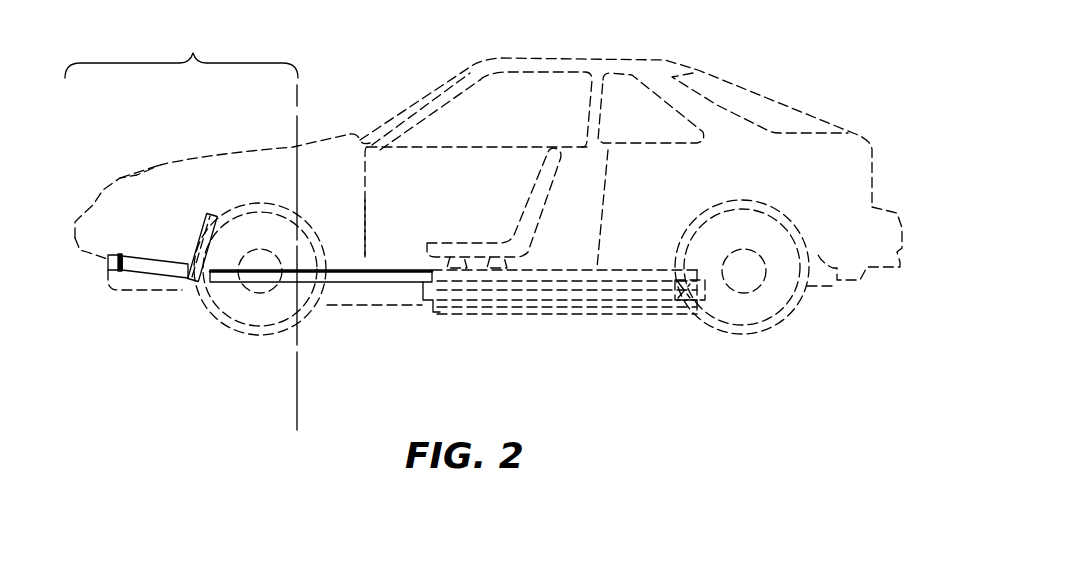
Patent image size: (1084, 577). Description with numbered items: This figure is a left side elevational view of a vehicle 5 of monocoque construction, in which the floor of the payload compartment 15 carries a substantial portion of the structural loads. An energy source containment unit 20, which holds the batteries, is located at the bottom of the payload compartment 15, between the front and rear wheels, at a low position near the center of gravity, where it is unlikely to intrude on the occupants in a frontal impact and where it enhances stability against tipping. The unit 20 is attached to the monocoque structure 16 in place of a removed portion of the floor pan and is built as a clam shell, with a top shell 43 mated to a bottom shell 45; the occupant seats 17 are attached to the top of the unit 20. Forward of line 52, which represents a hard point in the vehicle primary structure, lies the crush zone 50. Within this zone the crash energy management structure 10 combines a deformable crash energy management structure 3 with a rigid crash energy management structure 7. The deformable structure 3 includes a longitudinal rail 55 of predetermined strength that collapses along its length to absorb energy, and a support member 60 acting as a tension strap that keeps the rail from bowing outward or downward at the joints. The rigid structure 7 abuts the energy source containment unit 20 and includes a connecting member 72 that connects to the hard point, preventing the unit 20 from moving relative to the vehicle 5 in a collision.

The vehicle 5 is at (685, 38).
The payload compartment 15 is at (478, 103).
The crash energy management structure 10 is at (165, 185).
The crush zone 50 is at (181, 51).
The line 52 is at (300, 112).
The support member 60 is at (212, 205).
The longitudinal rail 55 is at (152, 257).
The deformable crash energy management structure 3 is at (144, 295).
The rigid crash energy management structure 7 is at (358, 295).
The connecting member 72 is at (357, 268).
The monocoque structure 16 is at (397, 305).
The bottom shell 45 is at (482, 313).
The energy source containment unit 20 is at (633, 313).
The top shell 43 is at (610, 268).
The occupant seats 17 is at (508, 190).